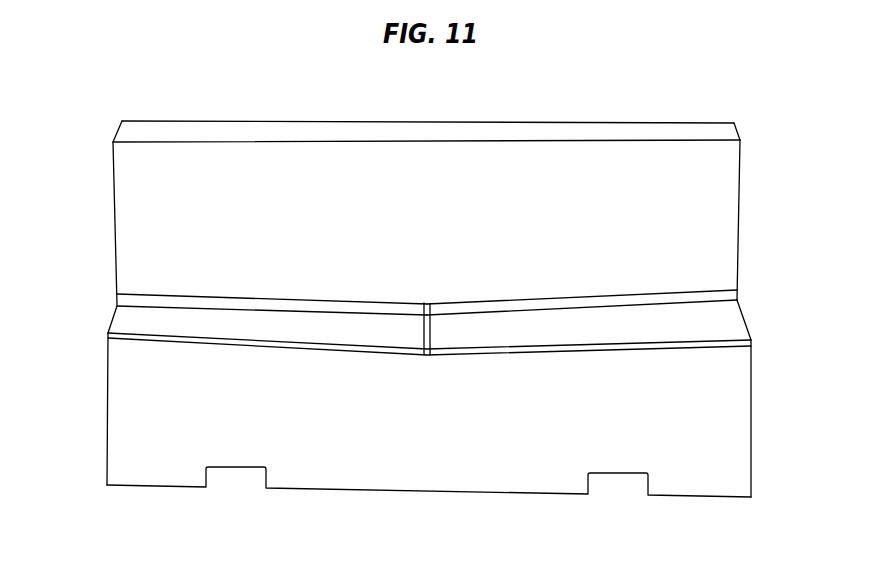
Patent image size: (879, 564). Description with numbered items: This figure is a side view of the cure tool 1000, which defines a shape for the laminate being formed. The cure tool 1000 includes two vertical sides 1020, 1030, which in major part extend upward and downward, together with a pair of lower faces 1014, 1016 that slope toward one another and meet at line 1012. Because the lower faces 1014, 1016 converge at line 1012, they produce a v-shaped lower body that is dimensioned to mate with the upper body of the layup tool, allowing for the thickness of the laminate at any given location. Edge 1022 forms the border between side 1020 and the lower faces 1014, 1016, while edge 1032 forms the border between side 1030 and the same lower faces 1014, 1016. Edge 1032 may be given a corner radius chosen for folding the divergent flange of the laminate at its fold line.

The cure tool 1000 is at (167, 111).
The vertical side 1020 is at (707, 198).
The edge 1022 is at (718, 291).
The line 1012 is at (428, 323).
The lower face 1014 is at (292, 326).
The lower face 1016 is at (645, 322).
The edge 1032 is at (123, 332).
The vertical side 1030 is at (376, 473).